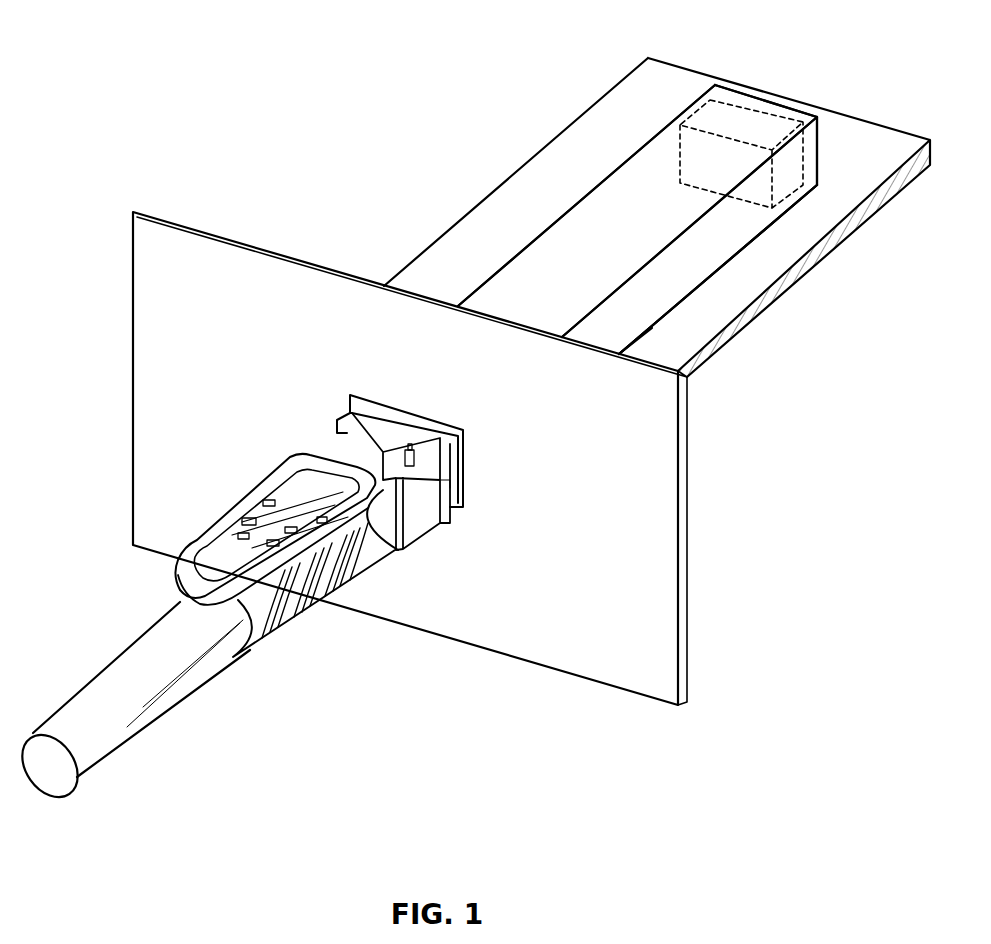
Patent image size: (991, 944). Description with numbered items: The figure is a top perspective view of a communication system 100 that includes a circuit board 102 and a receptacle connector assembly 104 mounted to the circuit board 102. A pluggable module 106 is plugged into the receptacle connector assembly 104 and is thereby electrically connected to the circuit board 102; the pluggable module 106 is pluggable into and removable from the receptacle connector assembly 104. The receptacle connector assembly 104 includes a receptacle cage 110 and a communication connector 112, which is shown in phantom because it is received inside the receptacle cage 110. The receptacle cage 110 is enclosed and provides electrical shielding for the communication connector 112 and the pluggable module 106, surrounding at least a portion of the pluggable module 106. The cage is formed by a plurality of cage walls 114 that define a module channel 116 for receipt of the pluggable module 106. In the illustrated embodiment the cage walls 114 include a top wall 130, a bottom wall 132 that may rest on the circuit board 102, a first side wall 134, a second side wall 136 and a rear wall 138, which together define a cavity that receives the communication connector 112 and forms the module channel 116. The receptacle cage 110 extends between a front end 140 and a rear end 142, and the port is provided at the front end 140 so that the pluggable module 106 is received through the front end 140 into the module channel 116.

The communication system 100 is at (258, 152).
The circuit board 102 is at (601, 120).
The receptacle connector assembly 104 is at (557, 172).
The pluggable module 106 is at (433, 530).
The receptacle cage 110 is at (658, 130).
The communication connector 112 is at (732, 117).
The cage walls 114 is at (683, 285).
The module channel 116 is at (441, 490).
The top wall 130 is at (507, 308).
The bottom wall 132 is at (652, 328).
The first side wall 134 is at (720, 238).
The second side wall 136 is at (487, 282).
The rear wall 138 is at (820, 157).
The front end 140 is at (337, 423).
The rear end 142 is at (773, 100).